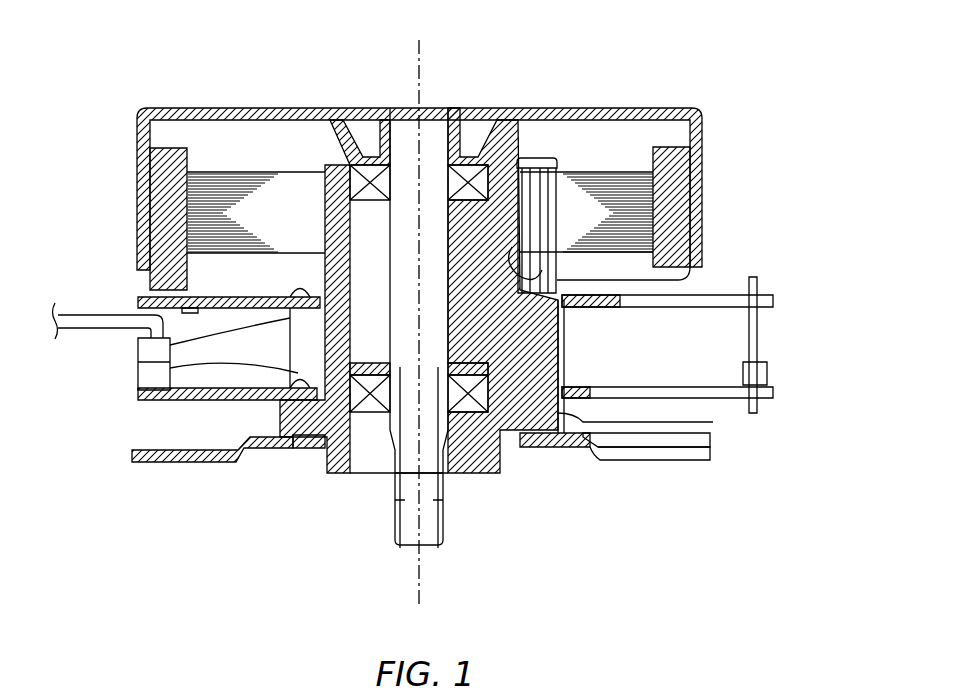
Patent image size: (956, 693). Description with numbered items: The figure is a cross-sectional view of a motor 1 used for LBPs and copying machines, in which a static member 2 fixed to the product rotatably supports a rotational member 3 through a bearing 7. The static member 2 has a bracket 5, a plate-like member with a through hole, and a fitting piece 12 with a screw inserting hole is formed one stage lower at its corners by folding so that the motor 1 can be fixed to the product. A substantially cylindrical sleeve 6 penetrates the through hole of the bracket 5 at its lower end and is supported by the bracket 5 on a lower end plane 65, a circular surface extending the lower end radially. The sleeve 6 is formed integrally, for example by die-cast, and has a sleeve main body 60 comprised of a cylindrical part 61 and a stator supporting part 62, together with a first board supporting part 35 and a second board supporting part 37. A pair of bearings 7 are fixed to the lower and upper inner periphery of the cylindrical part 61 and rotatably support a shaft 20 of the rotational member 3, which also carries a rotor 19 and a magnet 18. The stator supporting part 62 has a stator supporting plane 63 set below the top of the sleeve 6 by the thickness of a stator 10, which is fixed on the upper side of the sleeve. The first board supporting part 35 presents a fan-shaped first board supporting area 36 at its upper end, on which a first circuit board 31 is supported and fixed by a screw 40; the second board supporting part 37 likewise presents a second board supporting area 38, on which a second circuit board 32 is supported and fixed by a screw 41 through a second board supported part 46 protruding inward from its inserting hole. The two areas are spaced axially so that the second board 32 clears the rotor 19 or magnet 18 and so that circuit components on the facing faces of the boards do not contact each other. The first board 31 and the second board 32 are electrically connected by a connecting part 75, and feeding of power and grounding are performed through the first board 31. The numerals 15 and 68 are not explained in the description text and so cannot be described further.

The motor 1 is at (118, 80).
The static member 2 is at (160, 518).
The rotational member 3 is at (95, 128).
The bracket 5 is at (697, 460).
The sleeve 6 is at (710, 422).
The bearing 7 is at (497, 162).
The stator 10 is at (612, 170).
The fitting piece 12 is at (637, 452).
The base plate 15 is at (130, 400).
The magnet 18 is at (170, 195).
The rotor 19 is at (702, 160).
The shaft 20 is at (432, 118).
The first circuit board 31 is at (773, 395).
The second circuit board 32 is at (773, 300).
The first board supporting part 35 is at (283, 427).
The first board supporting area 36 is at (280, 402).
The second board supporting part 37 is at (152, 348).
The second board supporting area 38 is at (185, 312).
The screw 40 is at (138, 381).
The screw 41 is at (296, 285).
The second board supported part 46 is at (290, 300).
The sleeve main body 60 is at (592, 490).
The cylindrical part 61 is at (532, 458).
The stator supporting part 62 is at (540, 448).
The stator supporting plane 63 is at (592, 387).
The lower end plane 65 is at (291, 448).
The terminal block 68 is at (140, 355).
The connecting part 75 is at (757, 285).